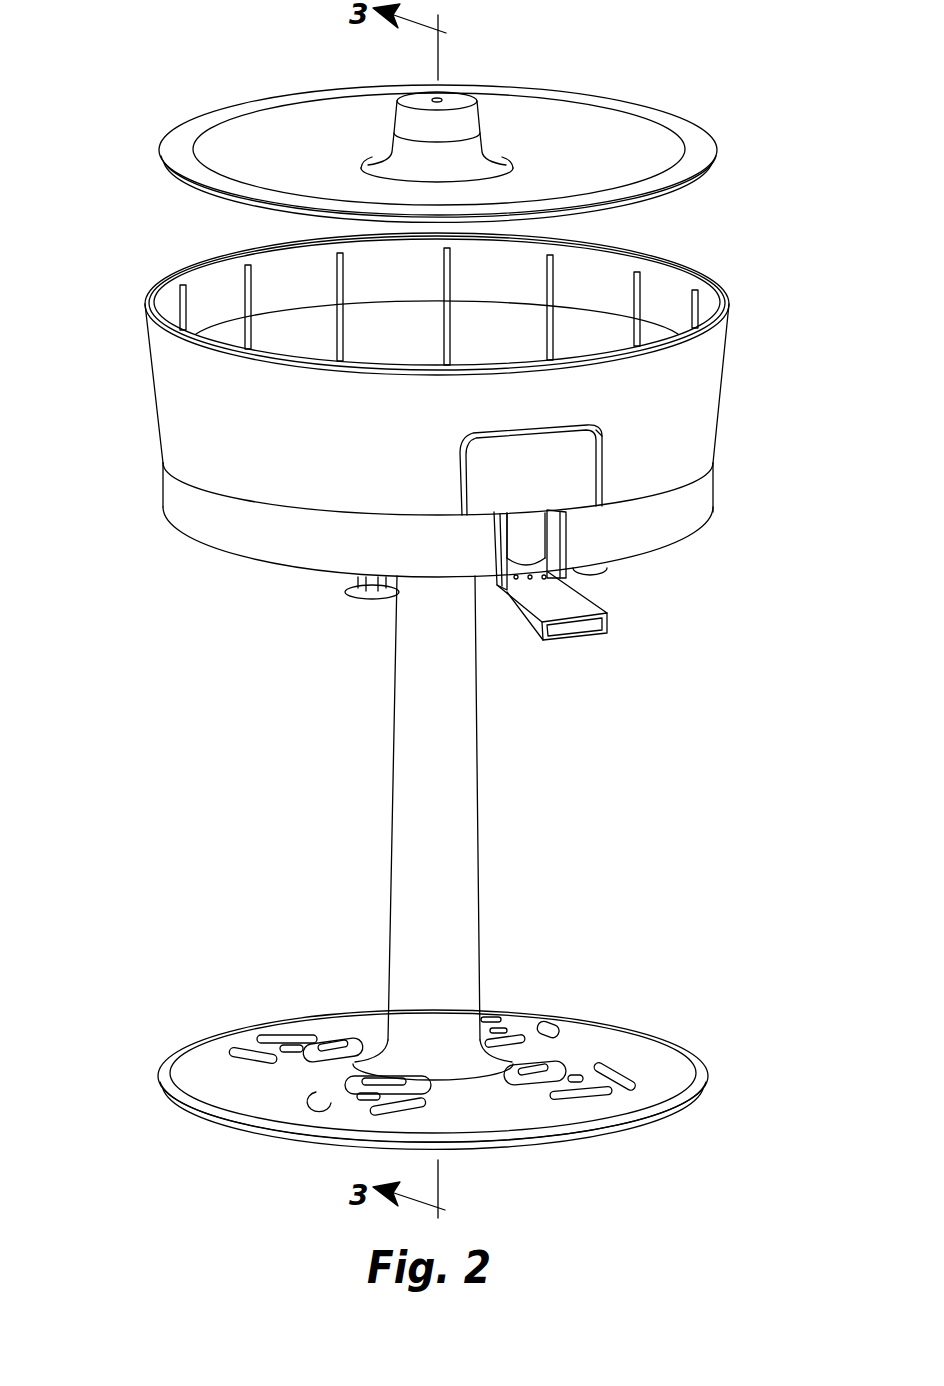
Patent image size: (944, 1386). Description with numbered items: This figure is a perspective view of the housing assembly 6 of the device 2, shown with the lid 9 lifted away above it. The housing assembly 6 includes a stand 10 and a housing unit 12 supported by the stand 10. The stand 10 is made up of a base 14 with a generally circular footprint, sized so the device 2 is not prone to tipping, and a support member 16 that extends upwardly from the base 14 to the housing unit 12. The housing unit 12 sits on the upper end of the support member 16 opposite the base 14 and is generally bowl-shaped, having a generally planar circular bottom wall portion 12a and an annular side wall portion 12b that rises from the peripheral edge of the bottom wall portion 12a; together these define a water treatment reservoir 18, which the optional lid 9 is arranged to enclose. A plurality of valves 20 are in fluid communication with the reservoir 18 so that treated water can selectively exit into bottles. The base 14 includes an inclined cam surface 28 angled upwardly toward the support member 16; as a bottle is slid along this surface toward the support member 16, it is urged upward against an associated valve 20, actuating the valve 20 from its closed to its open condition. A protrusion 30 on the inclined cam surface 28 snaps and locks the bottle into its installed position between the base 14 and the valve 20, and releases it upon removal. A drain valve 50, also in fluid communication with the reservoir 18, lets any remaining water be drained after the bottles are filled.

The device 2 is at (712, 90).
The lid 9 is at (593, 115).
The water treatment reservoir 18 is at (213, 299).
The housing assembly 6 is at (712, 389).
The side wall portion 12b is at (175, 406).
The housing unit 12 is at (693, 508).
The bottom wall portion 12a is at (299, 572).
The valves 20 is at (360, 592).
The drain valve 50 is at (578, 640).
The support member 16 is at (465, 812).
The stand 10 is at (470, 945).
The inclined cam surface 28 is at (628, 1038).
The protrusion 30 is at (342, 1043).
The base 14 is at (563, 1108).